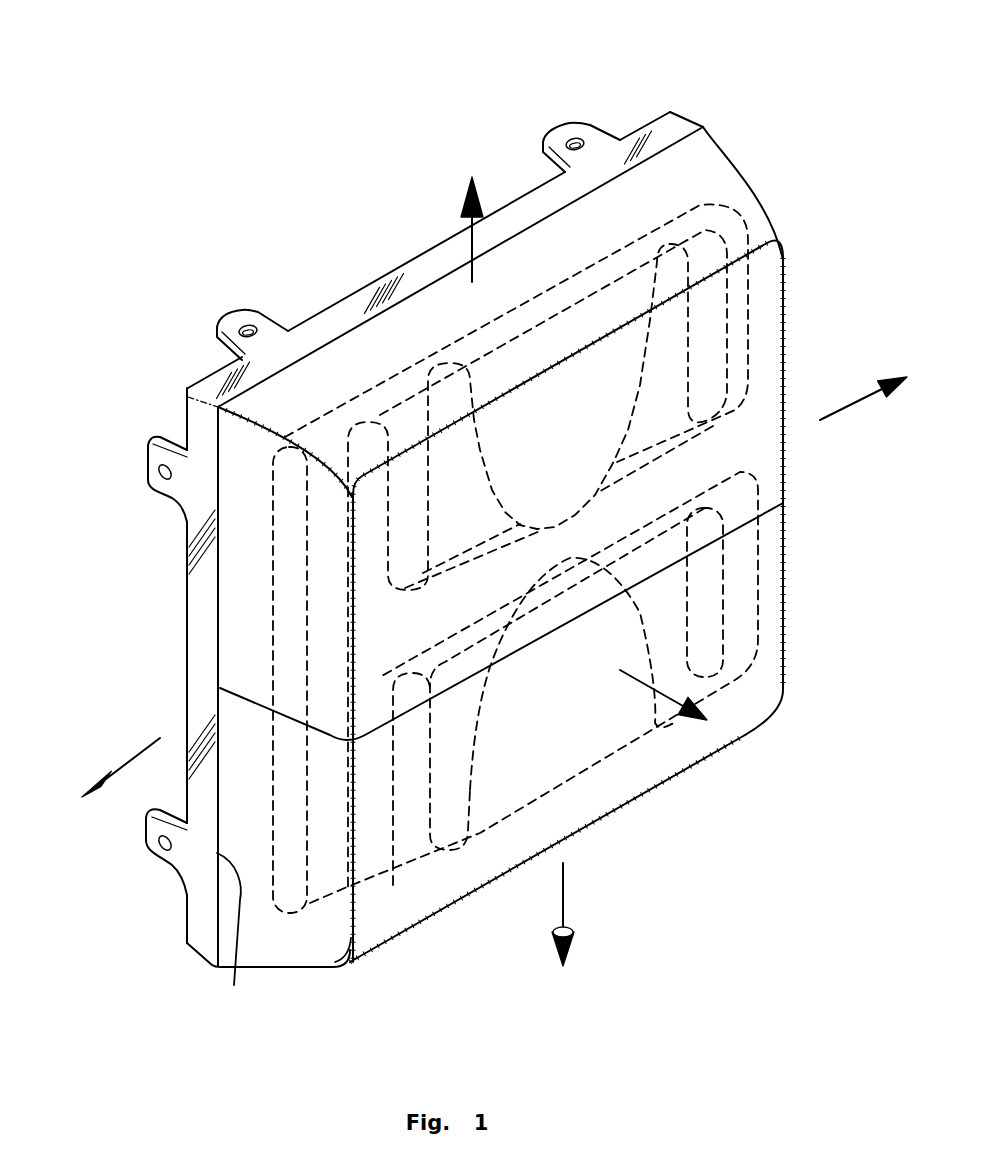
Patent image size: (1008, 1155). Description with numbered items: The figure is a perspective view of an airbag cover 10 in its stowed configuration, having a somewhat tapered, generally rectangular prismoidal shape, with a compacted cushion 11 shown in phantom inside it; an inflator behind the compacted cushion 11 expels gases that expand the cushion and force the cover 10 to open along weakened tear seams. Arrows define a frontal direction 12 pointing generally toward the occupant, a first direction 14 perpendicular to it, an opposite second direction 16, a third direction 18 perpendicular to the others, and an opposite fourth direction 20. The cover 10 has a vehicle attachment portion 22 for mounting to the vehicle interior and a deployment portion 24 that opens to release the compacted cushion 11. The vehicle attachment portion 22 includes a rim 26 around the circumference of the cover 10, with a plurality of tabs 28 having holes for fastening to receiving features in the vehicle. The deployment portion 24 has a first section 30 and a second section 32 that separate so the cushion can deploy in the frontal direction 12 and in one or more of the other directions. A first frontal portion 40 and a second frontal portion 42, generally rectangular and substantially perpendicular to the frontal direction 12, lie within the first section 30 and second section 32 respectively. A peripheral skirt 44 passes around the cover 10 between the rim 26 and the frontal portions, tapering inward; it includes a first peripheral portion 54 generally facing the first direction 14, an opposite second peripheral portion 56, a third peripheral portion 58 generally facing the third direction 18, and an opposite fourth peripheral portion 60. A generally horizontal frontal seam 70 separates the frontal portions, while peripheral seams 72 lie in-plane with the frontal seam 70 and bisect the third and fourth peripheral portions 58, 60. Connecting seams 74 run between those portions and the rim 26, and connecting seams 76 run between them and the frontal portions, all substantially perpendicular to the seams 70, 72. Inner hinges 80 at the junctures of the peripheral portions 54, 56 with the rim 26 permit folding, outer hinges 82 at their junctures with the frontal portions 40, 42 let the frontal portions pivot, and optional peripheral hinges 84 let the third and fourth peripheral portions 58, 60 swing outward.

The airbag cover 10 is at (310, 126).
The compacted cushion 11 is at (752, 338).
The frontal direction 12 is at (627, 680).
The first direction 14 is at (465, 235).
The second direction 16 is at (565, 903).
The third direction 18 is at (137, 752).
The fourth direction 20 is at (856, 410).
The vehicle attachment portion 22 is at (687, 114).
The deployment portion 24 is at (790, 230).
The rim 26 is at (218, 383).
The tabs 28 is at (556, 128).
The first section 30 is at (179, 601).
The second section 32 is at (179, 926).
The first frontal portion 40 is at (785, 285).
The second frontal portion 42 is at (787, 577).
The peripheral skirt 44 is at (780, 168).
The first peripheral portion 54 is at (410, 310).
The second peripheral portion 56 is at (613, 813).
The third peripheral portion 58 is at (226, 702).
The fourth peripheral portion 60 is at (783, 527).
The frontal seam 70 is at (593, 608).
The peripheral seams 72 is at (290, 716).
The connecting seams 74 is at (187, 404).
The connecting seams 76 is at (787, 410).
The inner hinges 80 is at (617, 184).
The outer hinges 82 is at (632, 315).
The peripheral hinges 84 is at (730, 160).